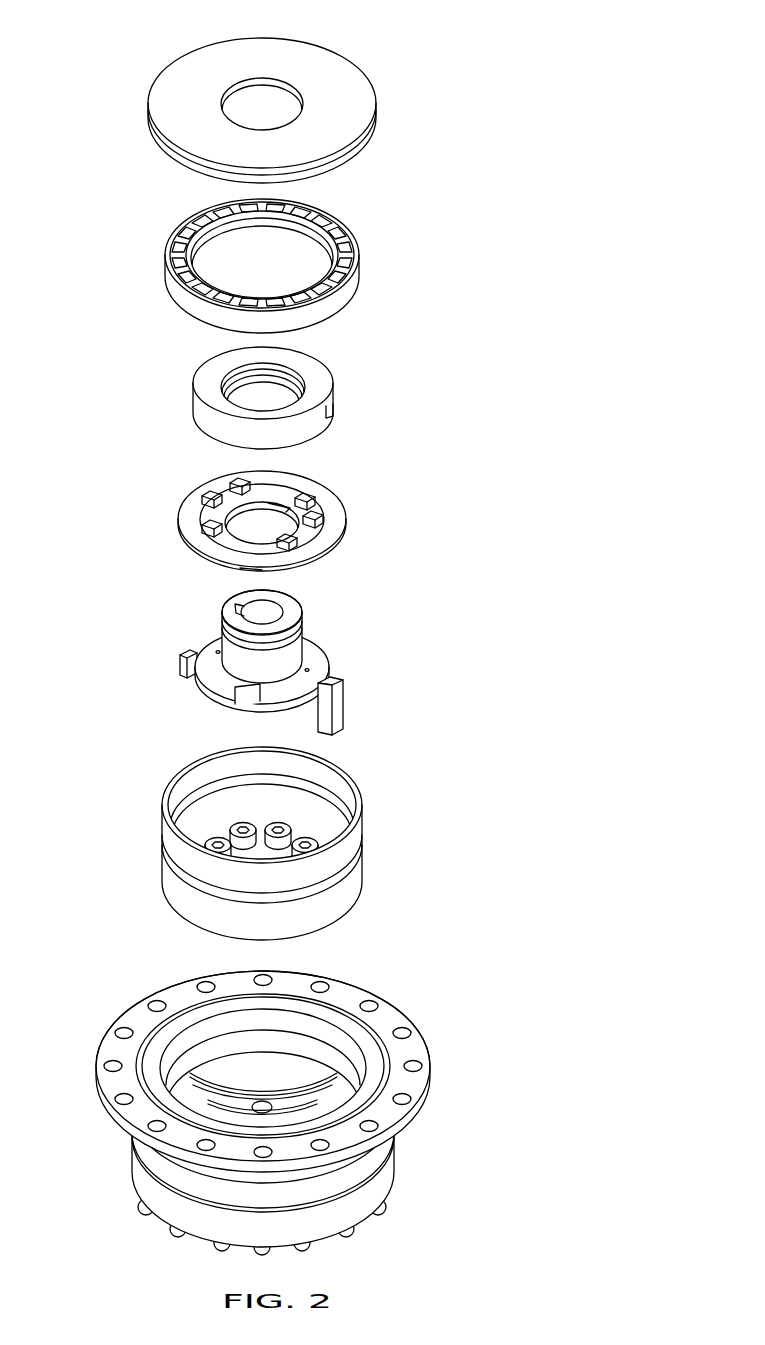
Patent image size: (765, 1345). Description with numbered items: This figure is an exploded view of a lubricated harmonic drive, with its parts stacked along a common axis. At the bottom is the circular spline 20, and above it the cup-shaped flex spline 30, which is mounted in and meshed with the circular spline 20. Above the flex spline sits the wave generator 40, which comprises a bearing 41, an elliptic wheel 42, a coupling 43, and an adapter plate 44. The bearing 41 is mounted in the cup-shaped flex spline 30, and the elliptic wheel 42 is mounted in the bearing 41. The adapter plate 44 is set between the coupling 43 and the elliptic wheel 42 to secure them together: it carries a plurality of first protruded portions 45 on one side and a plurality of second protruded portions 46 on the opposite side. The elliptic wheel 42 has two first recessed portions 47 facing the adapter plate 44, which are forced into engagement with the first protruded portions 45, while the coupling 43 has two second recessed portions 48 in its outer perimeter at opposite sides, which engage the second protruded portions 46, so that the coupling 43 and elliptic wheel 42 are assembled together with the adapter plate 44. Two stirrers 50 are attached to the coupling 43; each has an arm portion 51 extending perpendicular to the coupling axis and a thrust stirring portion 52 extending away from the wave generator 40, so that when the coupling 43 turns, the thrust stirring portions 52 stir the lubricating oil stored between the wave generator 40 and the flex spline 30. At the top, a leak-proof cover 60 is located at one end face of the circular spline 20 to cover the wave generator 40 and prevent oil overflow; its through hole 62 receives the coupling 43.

The circular spline 20 is at (445, 1084).
The cup-shaped flex spline 30 is at (382, 843).
The wave generator 40 is at (463, 198).
The bearing 41 is at (368, 260).
The elliptic wheel 42 is at (325, 393).
The coupling 43 is at (323, 622).
The adapter plate 44 is at (279, 523).
The first protruded portions 45 is at (302, 473).
The second protruded portions 46 is at (277, 505).
The first recessed portions 47 is at (368, 421).
The second recessed portions 48 is at (242, 690).
The stirrer 50 is at (245, 678).
The arm portion 51 is at (332, 680).
The thrust stirring portion 52 is at (327, 708).
The leak-proof cover 60 is at (269, 97).
The through hole 62 is at (252, 107).